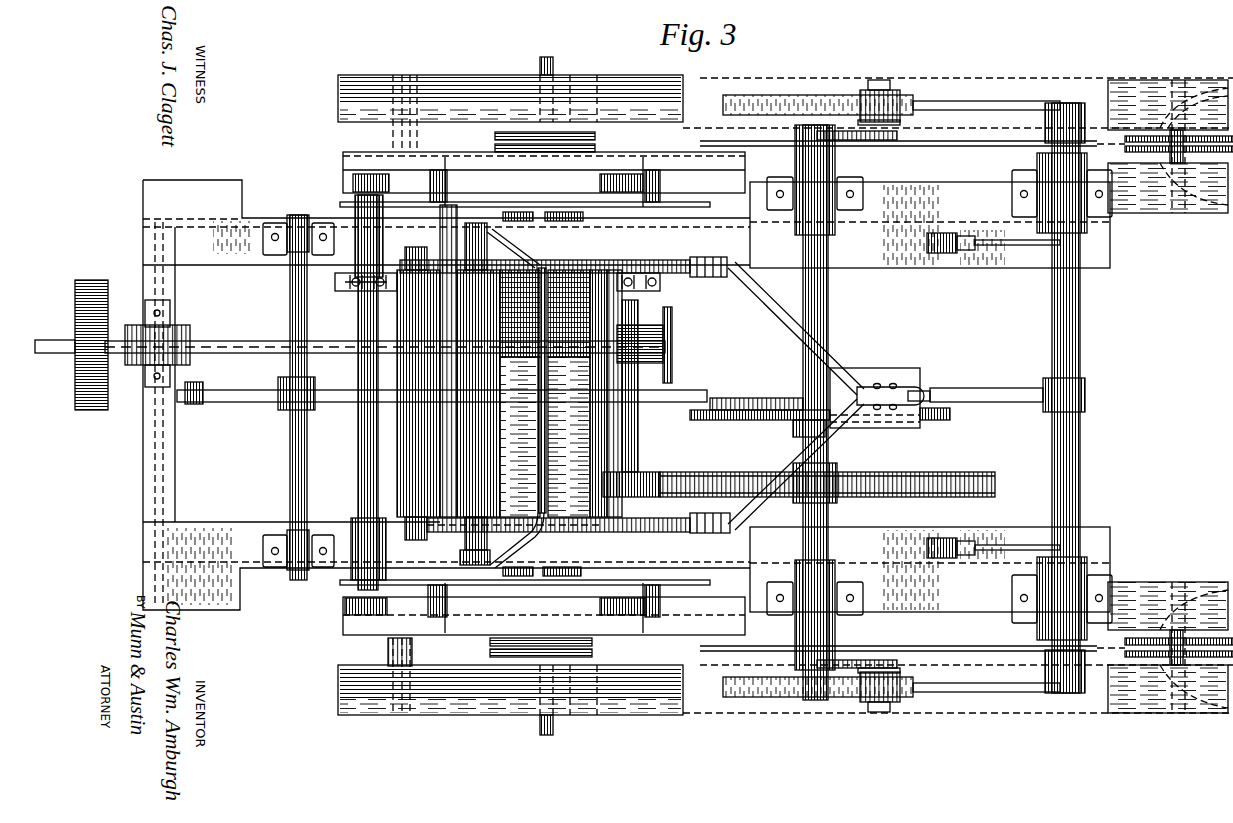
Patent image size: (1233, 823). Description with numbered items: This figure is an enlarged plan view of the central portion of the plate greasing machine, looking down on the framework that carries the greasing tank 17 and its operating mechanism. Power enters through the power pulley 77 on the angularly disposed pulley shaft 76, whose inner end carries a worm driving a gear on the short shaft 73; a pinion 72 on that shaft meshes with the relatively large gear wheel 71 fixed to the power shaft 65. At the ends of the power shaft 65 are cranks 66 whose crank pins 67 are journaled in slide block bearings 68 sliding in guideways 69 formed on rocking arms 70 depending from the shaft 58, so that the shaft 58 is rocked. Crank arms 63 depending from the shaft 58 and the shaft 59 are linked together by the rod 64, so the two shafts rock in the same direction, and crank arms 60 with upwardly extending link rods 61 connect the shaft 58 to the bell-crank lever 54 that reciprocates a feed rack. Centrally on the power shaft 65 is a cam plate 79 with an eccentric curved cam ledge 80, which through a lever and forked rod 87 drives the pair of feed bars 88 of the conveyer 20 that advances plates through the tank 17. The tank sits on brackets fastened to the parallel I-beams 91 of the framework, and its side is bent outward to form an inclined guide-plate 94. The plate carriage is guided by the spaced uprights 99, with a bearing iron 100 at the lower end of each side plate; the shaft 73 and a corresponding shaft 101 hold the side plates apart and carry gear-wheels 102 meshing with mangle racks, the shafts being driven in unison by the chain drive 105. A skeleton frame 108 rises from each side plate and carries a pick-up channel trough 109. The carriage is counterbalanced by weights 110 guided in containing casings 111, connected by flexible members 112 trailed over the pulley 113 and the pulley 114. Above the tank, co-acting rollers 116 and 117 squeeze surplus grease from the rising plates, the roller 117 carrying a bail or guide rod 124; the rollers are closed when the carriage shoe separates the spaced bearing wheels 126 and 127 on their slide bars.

The power pulley 77 is at (91, 283).
The pulley shaft 76 is at (235, 341).
The crank arms 63 is at (255, 392).
The chain drive 105 is at (392, 291).
The shaft 59 is at (297, 470).
The shaft 101 is at (368, 432).
The roller 116 is at (420, 460).
The roller 117 is at (482, 470).
The bail or guide rod 124 is at (545, 445).
The greasing tank 17 is at (553, 508).
The open top channel trough 109 is at (645, 238).
The gear-wheels 102 is at (353, 183).
The bearing iron 100 is at (352, 152).
The skeleton frame 108 is at (445, 173).
The bearing wheel 126 is at (521, 212).
The bearing wheel 127 is at (562, 212).
The pulley 114 is at (495, 137).
The uprights 99 is at (413, 652).
The conveyer 20 is at (655, 266).
The feed bars 88 is at (705, 278).
The forked rod 87 is at (770, 303).
The I-beams 91 is at (780, 258).
The power shaft 65 is at (830, 302).
The cranks 66 is at (877, 141).
The crank pins 67 is at (880, 80).
The slide block bearings 68 is at (897, 96).
The guideways 69 is at (765, 100).
The rocking arms 70 is at (966, 103).
The flexible members 112 is at (950, 148).
The pulley 113 is at (1128, 150).
The containing casings 111 is at (1177, 398).
The weights 110 is at (1166, 162).
The link rods 61 is at (938, 254).
The crank arms 60 is at (1010, 250).
The bell-crank lever 54 is at (935, 385).
The rod 64 is at (985, 390).
The shaft 58 is at (1080, 436).
The cam ledge 80 is at (752, 398).
The cam plate 79 is at (750, 421).
The gear wheel 71 is at (935, 472).
The pinion 72 is at (630, 473).
The shaft 73 is at (633, 434).
The inclined guide-plate 94 is at (665, 378).